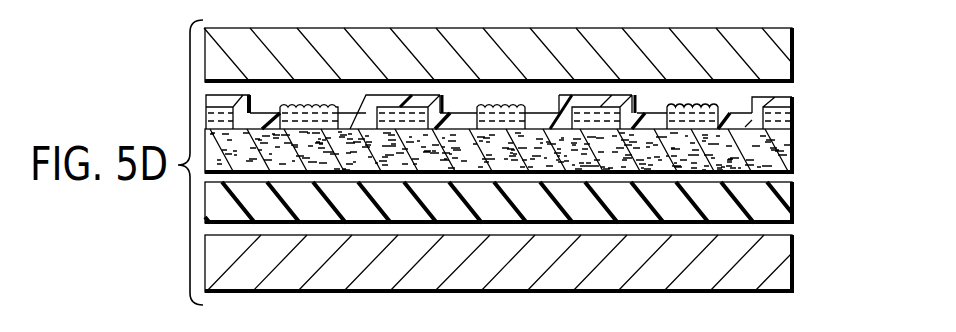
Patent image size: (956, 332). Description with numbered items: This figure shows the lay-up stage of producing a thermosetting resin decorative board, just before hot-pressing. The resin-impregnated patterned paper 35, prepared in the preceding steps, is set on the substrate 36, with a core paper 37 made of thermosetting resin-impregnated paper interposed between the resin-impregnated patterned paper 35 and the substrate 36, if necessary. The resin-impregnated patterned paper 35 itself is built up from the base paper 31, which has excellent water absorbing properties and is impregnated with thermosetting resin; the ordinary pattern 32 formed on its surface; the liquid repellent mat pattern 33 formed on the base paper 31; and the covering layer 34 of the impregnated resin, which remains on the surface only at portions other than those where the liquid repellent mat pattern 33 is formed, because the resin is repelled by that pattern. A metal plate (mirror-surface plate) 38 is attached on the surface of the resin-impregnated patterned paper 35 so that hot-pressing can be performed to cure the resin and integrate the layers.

The base paper 31 is at (530, 135).
The ordinary pattern 32 is at (786, 112).
The liquid repellent mat pattern 33 is at (706, 105).
The covering layer of the impregnated resin 34 is at (780, 100).
The resin-impregnated patterned paper 35 is at (553, 110).
The substrate 36 is at (790, 262).
The core paper 37 is at (790, 208).
The metal plate (mirror-surface plate) 38 is at (782, 48).